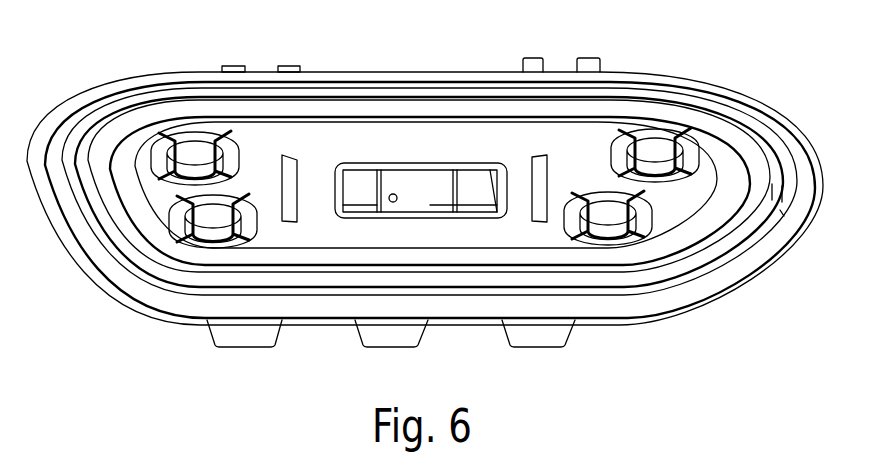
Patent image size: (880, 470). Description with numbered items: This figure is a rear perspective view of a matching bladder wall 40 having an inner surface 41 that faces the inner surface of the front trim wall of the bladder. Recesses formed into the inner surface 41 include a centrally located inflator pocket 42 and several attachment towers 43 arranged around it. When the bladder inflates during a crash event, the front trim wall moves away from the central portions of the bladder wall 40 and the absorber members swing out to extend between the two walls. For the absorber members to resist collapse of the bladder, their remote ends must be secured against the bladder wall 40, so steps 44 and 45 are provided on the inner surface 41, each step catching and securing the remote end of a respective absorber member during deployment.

The bladder wall 40 is at (705, 310).
The inner surface 41 is at (342, 135).
The inflator pocket 42 is at (418, 187).
The attachment towers 43 is at (225, 212).
The step 44 is at (290, 205).
The step 45 is at (530, 205).